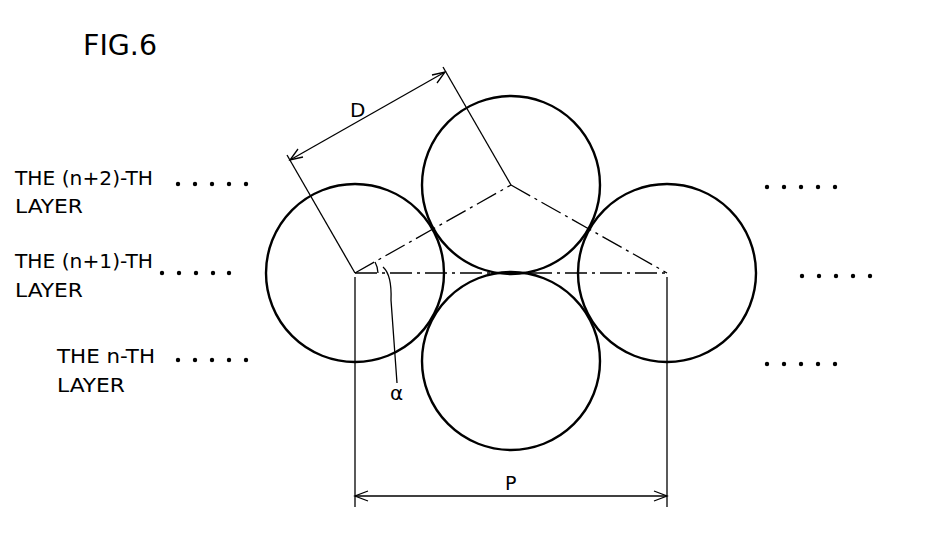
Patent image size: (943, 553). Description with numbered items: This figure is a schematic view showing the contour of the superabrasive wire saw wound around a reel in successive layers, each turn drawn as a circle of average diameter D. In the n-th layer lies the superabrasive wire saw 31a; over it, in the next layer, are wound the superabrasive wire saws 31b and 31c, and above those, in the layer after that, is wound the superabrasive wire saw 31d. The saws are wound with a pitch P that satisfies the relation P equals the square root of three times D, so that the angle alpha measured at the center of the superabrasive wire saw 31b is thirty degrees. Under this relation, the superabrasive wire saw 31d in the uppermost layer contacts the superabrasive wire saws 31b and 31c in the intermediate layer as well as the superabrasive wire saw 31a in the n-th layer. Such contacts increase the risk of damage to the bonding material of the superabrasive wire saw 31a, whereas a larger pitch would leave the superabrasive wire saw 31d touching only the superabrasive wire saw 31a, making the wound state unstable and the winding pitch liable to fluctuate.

The superabrasive wire saw 31a is at (578, 395).
The superabrasive wire saw 31b is at (333, 345).
The superabrasive wire saw 31c is at (695, 340).
The superabrasive wire saw 31d is at (567, 138).